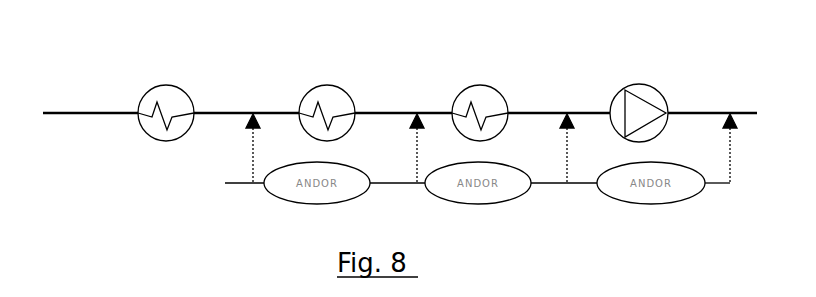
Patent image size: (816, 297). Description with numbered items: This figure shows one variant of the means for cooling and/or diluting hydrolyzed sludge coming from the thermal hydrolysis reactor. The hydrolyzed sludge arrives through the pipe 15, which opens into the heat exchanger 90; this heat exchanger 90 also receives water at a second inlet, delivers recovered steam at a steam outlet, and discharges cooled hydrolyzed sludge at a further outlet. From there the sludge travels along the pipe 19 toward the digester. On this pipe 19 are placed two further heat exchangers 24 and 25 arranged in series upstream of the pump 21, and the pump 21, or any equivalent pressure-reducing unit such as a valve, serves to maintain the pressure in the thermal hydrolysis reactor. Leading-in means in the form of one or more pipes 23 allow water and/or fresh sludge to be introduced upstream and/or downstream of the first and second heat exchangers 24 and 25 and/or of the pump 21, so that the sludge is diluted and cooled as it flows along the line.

The pipe 15 is at (93, 110).
The pipe 19 is at (240, 110).
The heat exchanger 90 is at (142, 133).
The heat exchanger 24 is at (345, 87).
The heat exchanger 25 is at (493, 87).
The pump 21 is at (653, 85).
The pipes 23 is at (227, 187).